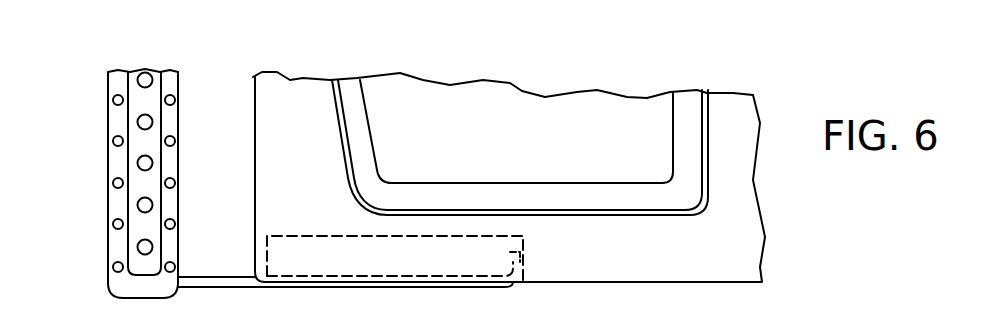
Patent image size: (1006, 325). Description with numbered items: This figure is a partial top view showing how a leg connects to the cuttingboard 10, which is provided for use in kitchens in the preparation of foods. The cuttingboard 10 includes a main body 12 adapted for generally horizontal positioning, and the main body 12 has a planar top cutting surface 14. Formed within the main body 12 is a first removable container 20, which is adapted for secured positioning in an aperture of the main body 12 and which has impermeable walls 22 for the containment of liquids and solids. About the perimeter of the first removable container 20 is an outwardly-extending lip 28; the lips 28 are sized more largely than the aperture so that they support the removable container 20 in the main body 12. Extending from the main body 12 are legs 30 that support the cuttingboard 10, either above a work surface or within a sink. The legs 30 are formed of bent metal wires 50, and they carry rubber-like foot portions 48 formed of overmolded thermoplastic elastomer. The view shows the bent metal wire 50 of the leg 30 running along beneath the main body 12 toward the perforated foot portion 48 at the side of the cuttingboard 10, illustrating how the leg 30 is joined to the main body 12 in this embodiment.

The cuttingboard 10 is at (795, 252).
The main body 12 is at (732, 113).
The planar top cutting surface 14 is at (295, 88).
The first removable container 20 is at (425, 110).
The impermeable walls 22 is at (648, 113).
The outwardly-extending lips 28 is at (350, 90).
The legs 30 is at (203, 282).
The rubber-like foot portions 48 is at (147, 95).
The bent metal wires 50 is at (242, 282).